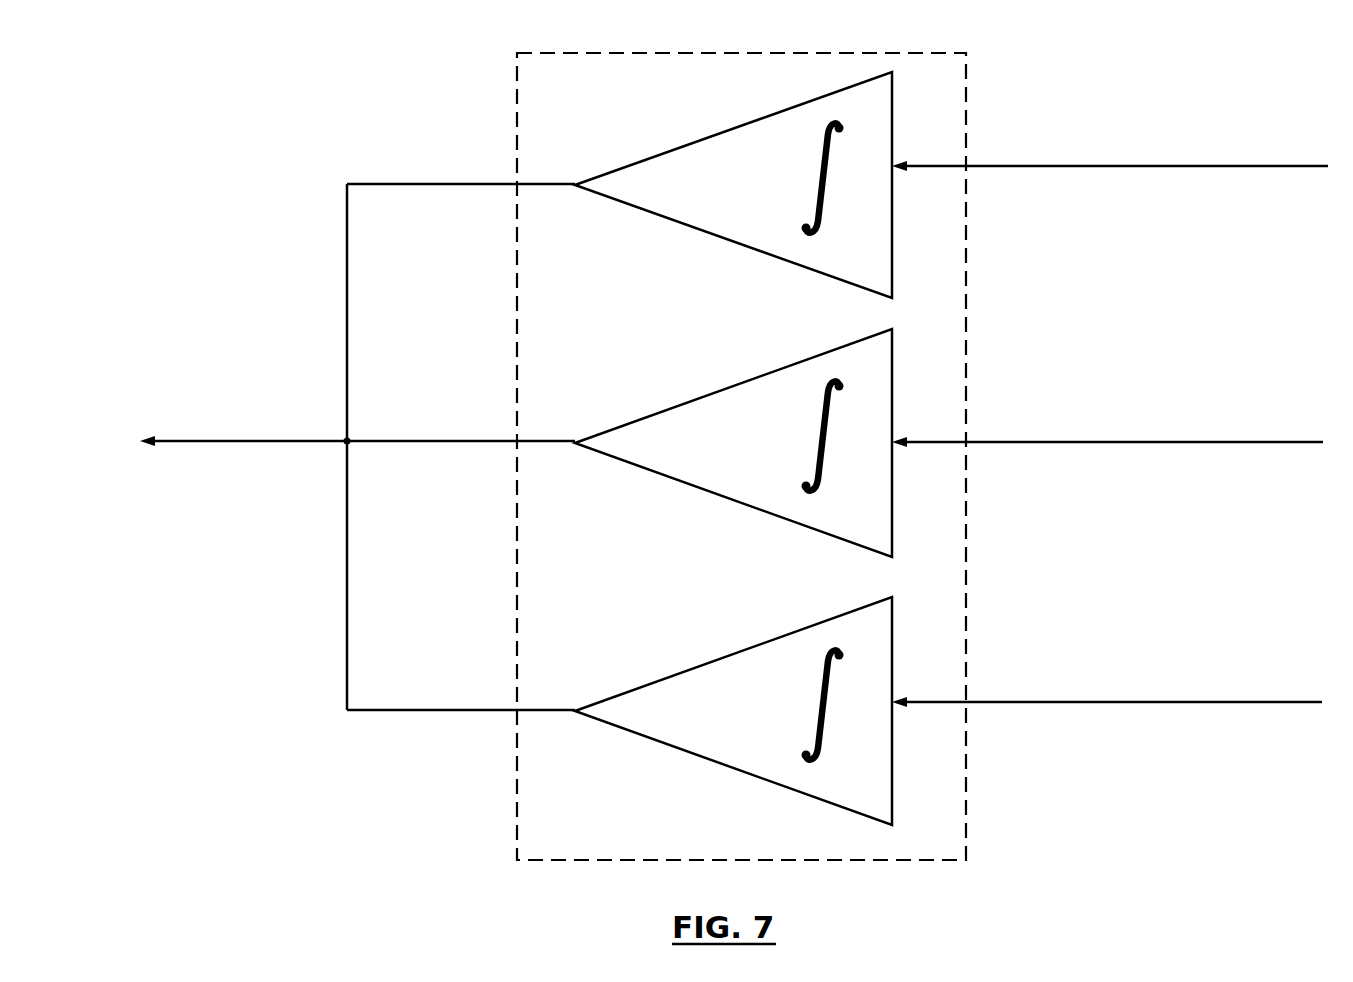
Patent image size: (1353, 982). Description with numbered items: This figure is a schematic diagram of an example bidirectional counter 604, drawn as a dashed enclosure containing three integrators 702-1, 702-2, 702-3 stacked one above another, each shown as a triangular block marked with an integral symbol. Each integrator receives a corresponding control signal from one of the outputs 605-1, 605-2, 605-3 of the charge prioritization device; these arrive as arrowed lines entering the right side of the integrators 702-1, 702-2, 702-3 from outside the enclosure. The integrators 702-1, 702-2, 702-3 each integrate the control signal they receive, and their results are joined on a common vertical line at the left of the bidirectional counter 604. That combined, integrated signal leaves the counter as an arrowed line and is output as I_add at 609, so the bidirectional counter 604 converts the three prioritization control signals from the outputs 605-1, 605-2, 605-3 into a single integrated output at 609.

The bidirectional counter 604 is at (966, 87).
The output 609 is at (229, 440).
The integrator 702-1 is at (690, 140).
The integrator 702-2 is at (719, 389).
The integrator 702-3 is at (715, 657).
The output 605-1 is at (1118, 166).
The output 605-2 is at (1115, 442).
The output 605-3 is at (1114, 702).